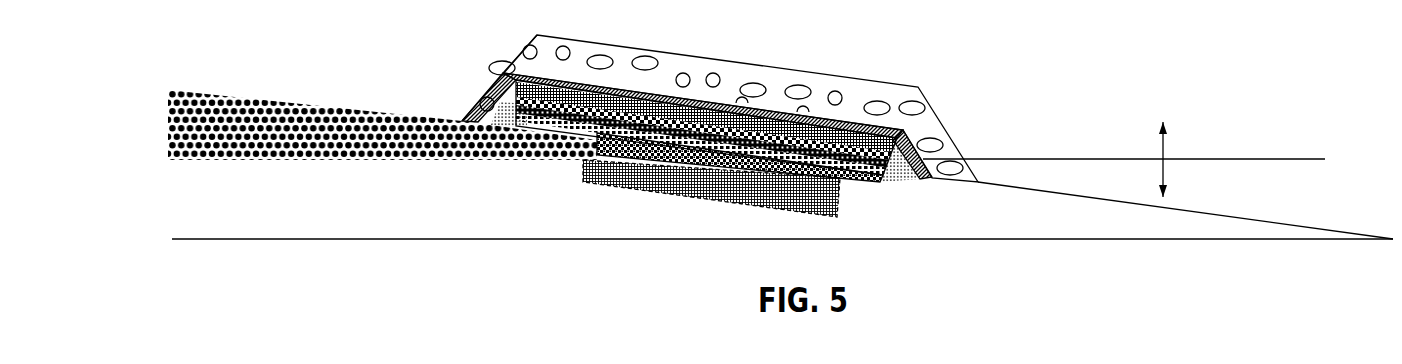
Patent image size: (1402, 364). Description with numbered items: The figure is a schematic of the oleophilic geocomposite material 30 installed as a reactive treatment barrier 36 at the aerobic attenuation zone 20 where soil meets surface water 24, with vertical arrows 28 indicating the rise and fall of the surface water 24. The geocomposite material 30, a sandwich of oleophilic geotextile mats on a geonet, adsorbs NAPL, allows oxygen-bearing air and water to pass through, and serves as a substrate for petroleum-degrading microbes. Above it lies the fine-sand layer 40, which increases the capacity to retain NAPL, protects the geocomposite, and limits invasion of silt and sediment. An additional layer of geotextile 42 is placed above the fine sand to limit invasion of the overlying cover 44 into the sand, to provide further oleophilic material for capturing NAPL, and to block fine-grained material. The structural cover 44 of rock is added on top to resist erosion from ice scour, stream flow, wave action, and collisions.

The aerobic attenuation zone 20 is at (654, 189).
The surface water 24 is at (1040, 158).
The vertical arrows 28 is at (1165, 148).
The oleophilic geocomposite material 30 is at (857, 183).
The reactive treatment barrier 36 is at (833, 120).
The fine-sand layer 40 is at (490, 103).
The additional layer of geotextile 42 is at (905, 132).
The overlying cover 44 is at (829, 88).